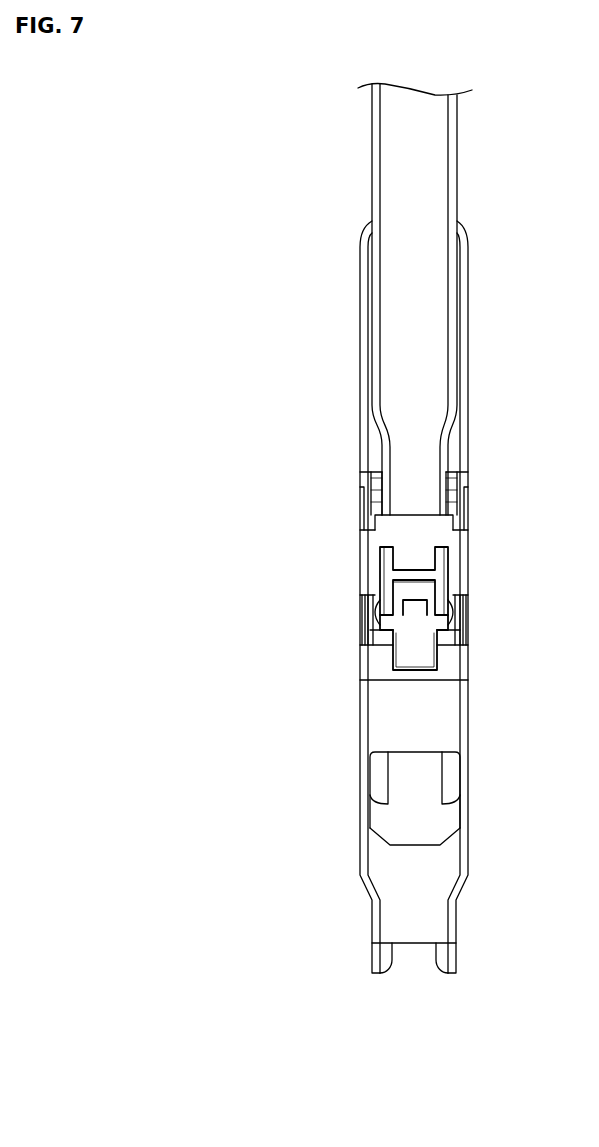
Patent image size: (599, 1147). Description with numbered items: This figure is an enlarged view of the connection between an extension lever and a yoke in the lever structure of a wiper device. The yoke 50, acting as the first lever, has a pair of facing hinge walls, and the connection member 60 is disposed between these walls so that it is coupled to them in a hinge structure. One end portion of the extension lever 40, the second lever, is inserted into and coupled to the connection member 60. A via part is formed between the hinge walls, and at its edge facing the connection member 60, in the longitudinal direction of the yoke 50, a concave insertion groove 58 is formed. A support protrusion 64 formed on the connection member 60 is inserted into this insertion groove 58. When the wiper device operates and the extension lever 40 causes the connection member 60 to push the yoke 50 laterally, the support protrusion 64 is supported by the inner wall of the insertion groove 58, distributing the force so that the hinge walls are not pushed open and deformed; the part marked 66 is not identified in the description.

The extension lever 40 is at (440, 364).
The yoke 50 is at (450, 720).
The insertion groove 58 is at (422, 670).
The connection member 60 is at (442, 622).
The support protrusion 64 is at (422, 653).
The coupling member 66 is at (462, 563).